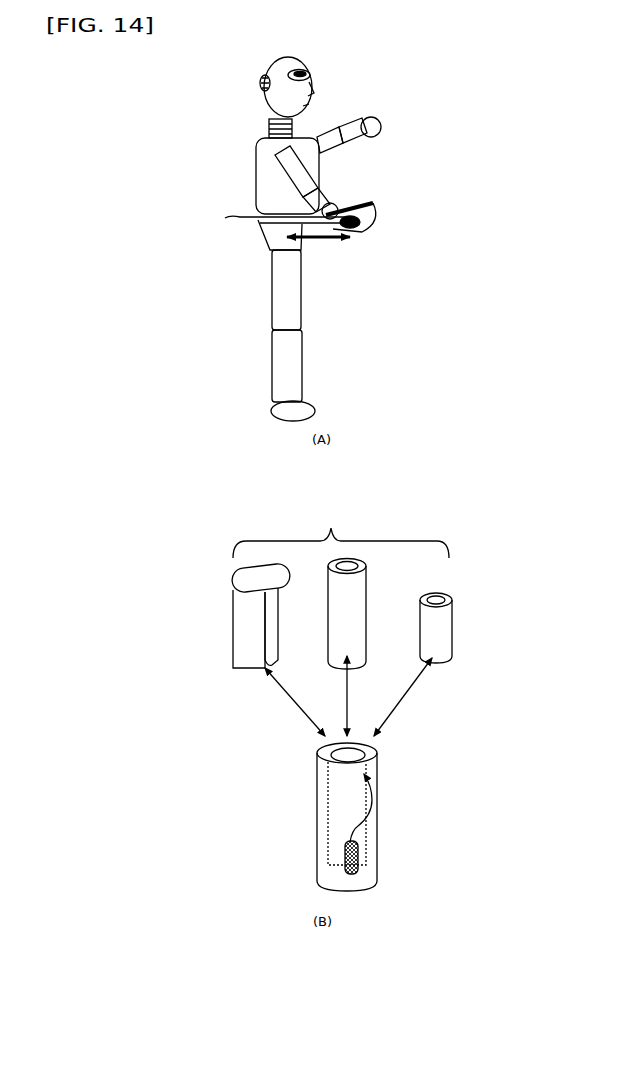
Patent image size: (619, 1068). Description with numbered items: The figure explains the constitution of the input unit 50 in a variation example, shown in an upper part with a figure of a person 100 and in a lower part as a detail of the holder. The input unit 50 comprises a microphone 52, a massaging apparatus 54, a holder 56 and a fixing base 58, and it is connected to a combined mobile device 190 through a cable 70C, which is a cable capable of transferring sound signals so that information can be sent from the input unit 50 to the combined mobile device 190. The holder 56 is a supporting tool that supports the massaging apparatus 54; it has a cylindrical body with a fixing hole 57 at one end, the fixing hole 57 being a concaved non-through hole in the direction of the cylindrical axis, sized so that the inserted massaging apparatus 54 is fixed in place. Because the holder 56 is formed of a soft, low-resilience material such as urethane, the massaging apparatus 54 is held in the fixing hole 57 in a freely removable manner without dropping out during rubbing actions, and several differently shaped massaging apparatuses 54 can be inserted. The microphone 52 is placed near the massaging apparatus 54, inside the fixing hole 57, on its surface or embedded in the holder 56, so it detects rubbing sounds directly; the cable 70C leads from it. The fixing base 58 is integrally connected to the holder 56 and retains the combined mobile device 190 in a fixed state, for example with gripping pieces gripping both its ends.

The dummy 100 is at (272, 151).
The combined mobile device 190 is at (368, 203).
The cable 70C is at (374, 214).
The fixing base 58 is at (300, 219).
The holder 56 is at (362, 233).
The massaging apparatus 54 is at (335, 234).
The microphone 52 is at (341, 238).
The input unit 50 is at (494, 320).
The fixing hole 57 is at (345, 757).